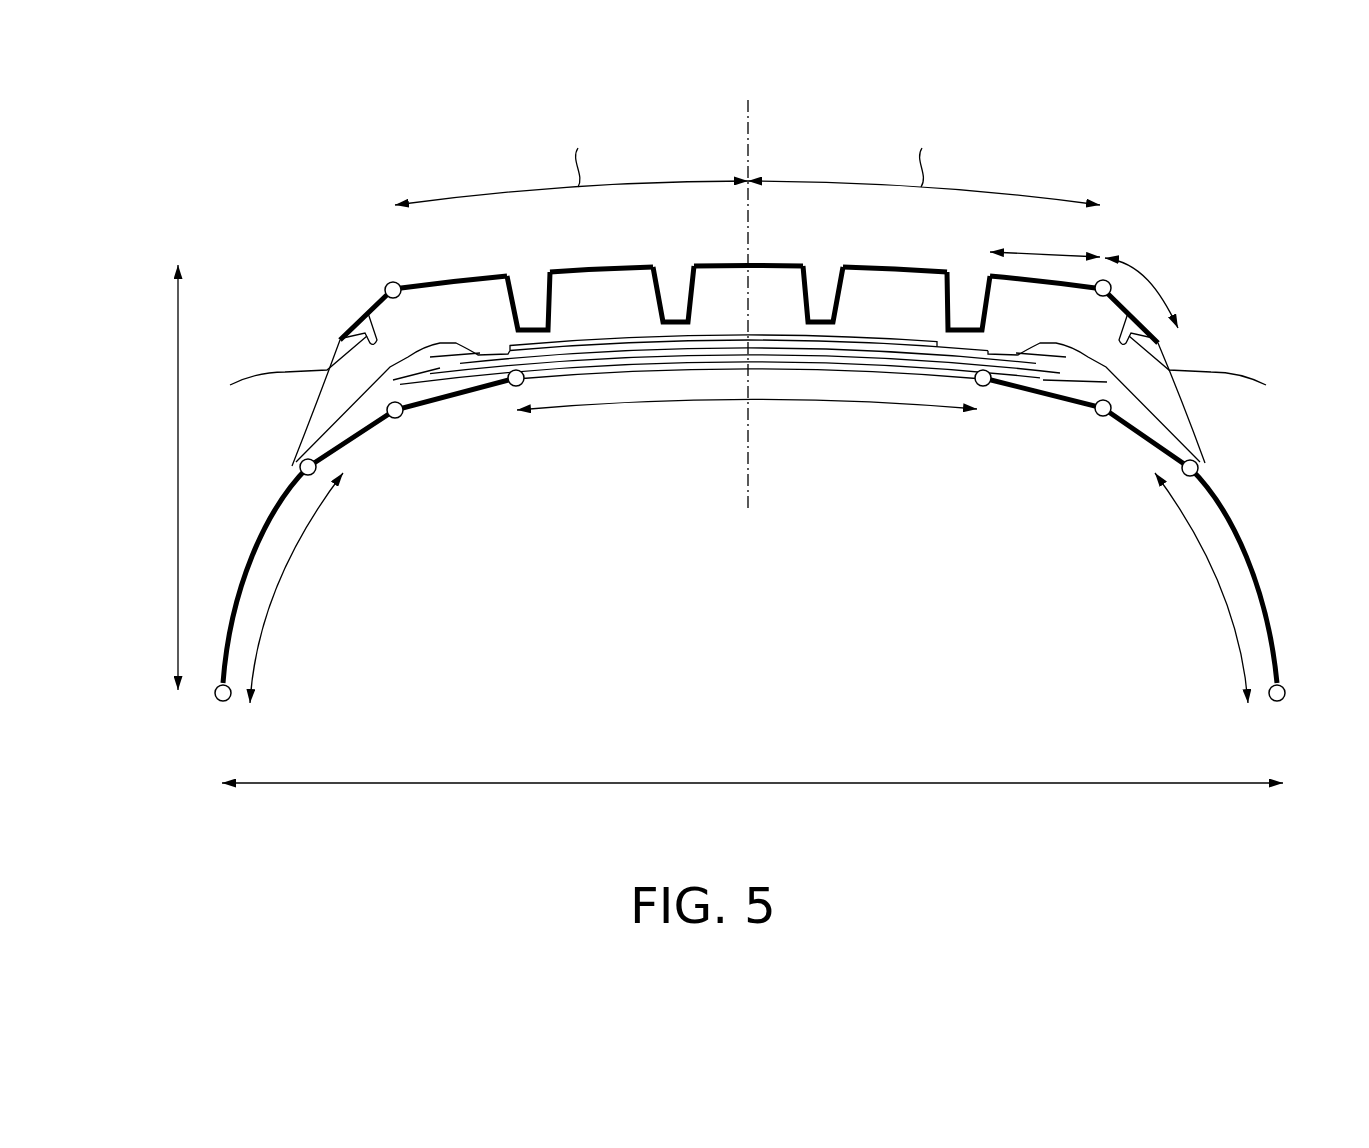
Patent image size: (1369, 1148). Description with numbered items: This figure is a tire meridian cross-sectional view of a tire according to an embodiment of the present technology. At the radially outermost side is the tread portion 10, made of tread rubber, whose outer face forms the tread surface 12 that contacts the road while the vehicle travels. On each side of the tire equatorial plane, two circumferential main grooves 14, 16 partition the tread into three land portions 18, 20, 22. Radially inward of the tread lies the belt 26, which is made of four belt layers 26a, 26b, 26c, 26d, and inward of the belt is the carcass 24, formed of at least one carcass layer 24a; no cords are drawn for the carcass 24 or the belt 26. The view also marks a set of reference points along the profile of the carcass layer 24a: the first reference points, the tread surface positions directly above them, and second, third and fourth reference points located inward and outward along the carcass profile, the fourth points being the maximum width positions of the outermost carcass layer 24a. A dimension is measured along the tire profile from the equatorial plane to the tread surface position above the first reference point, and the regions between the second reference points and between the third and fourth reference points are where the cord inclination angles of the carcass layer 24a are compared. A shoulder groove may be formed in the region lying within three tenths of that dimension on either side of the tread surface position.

The tread portion 10 is at (375, 187).
The tread surface 12 is at (606, 265).
The circumferential main groove 14 is at (678, 290).
The circumferential main groove 16 is at (531, 292).
The land portion 18 is at (710, 312).
The land portion 20 is at (587, 314).
The land portion 22 is at (459, 329).
The carcass 24 is at (790, 511).
The carcass layer 24a is at (1252, 563).
The belt 26 is at (748, 482).
The belt layer 26a is at (1042, 380).
The belt layer 26b is at (1073, 382).
The belt layer 26c is at (1065, 357).
The belt layer 26d is at (942, 348).